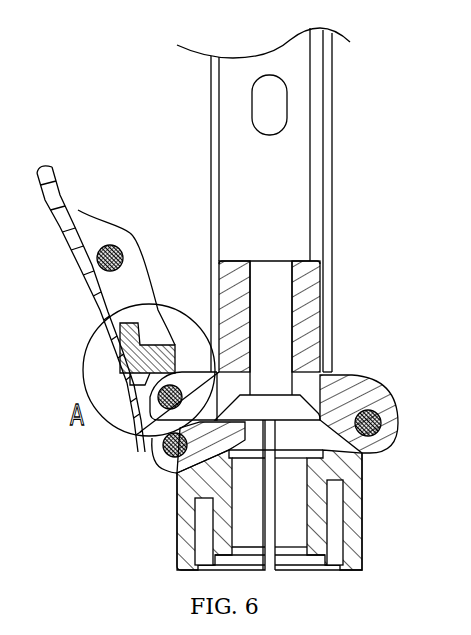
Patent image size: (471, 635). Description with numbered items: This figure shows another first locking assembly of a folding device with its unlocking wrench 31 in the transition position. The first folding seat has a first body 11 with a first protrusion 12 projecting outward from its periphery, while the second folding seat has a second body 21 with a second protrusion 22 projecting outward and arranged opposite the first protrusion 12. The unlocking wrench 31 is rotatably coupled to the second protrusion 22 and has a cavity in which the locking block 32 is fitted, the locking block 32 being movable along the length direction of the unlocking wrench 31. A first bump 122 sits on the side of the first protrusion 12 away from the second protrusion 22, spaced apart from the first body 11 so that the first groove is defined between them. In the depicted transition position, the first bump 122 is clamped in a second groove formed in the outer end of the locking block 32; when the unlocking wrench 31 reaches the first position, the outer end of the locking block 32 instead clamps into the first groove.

The first body 11 is at (307, 352).
The first protrusion 12 is at (158, 408).
The first bump 122 is at (130, 378).
The second body 21 is at (358, 493).
The second protrusion 22 is at (167, 458).
The unlocking wrench 31 is at (80, 246).
The locking block 32 is at (130, 352).